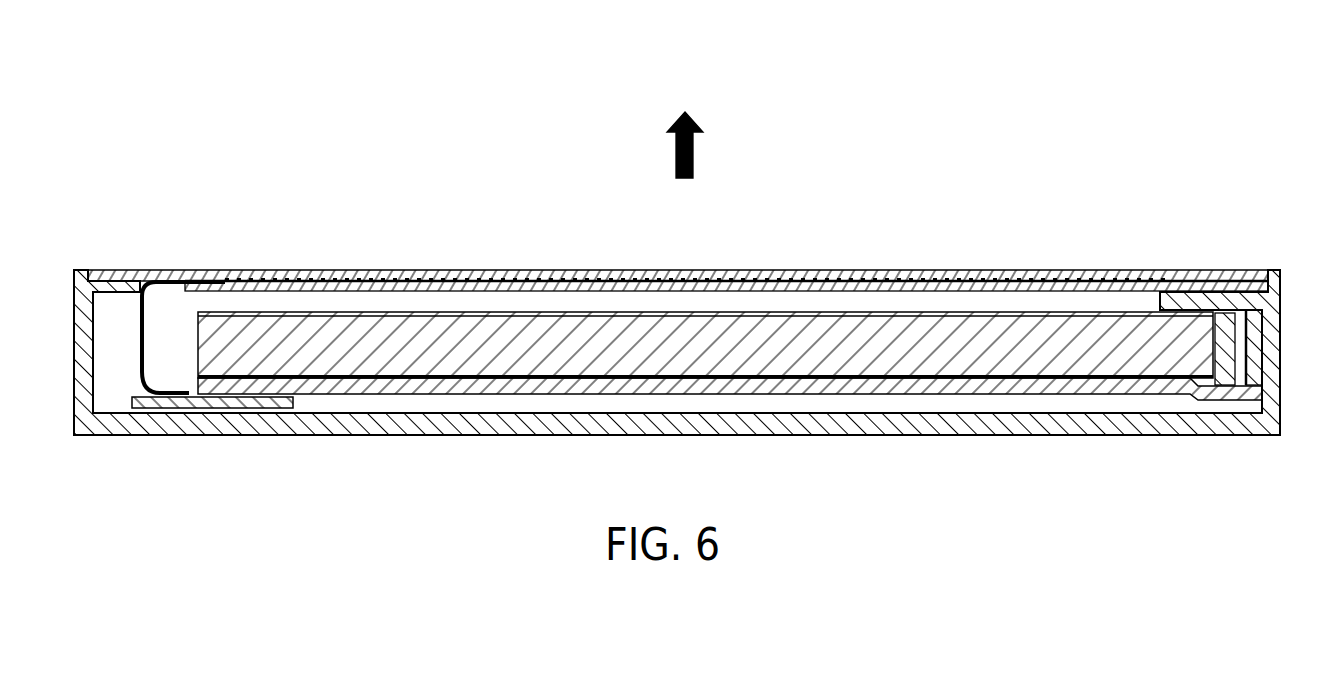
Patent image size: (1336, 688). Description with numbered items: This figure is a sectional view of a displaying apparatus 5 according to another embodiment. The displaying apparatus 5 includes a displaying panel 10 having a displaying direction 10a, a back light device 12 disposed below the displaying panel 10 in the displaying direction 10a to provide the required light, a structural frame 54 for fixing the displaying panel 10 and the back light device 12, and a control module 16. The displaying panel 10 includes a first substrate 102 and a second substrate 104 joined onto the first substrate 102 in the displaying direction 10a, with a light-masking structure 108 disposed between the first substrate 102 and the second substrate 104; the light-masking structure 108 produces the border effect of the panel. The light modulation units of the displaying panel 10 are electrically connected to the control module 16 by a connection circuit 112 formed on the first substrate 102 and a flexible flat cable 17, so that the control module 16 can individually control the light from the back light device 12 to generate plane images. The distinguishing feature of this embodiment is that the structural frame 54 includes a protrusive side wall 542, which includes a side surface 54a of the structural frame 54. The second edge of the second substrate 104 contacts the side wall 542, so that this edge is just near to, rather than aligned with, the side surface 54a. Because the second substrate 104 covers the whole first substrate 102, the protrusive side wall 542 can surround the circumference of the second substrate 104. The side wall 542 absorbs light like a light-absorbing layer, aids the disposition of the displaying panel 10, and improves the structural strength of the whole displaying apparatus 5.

The displaying apparatus 5 is at (1035, 77).
The displaying panel 10 is at (1079, 269).
The displaying direction 10a is at (678, 157).
The back light device 12 is at (1123, 396).
The control module 16 is at (181, 402).
The flexible flat cable 17 is at (143, 272).
The structural frame 54 is at (1281, 380).
The side surface 54a is at (1283, 290).
The first substrate 102 is at (943, 290).
The second substrate 104 is at (1003, 272).
The light-masking structure 108 is at (1200, 281).
The connection circuit 112 is at (178, 280).
The protrusive side wall 542 is at (84, 270).